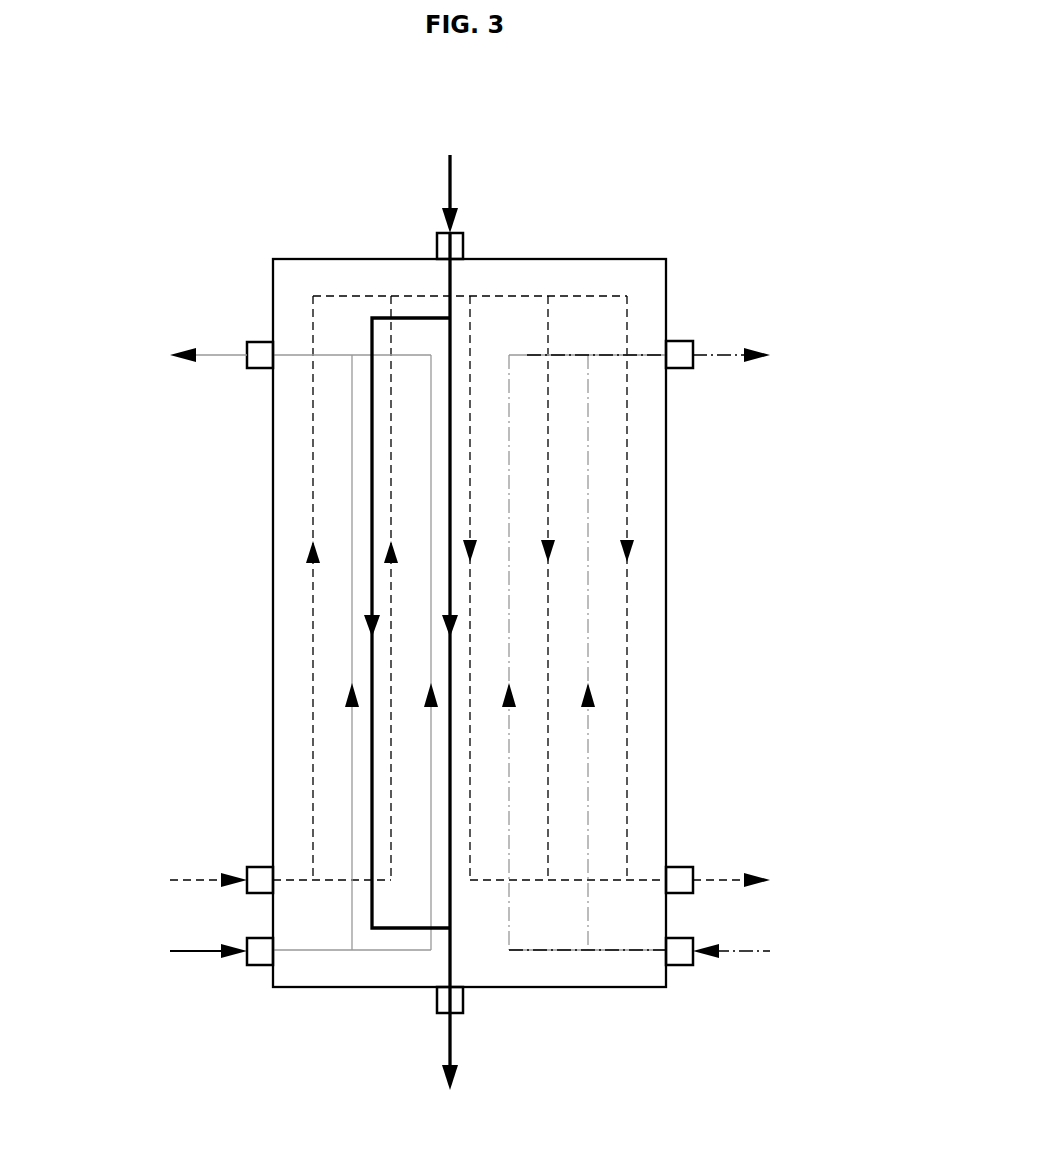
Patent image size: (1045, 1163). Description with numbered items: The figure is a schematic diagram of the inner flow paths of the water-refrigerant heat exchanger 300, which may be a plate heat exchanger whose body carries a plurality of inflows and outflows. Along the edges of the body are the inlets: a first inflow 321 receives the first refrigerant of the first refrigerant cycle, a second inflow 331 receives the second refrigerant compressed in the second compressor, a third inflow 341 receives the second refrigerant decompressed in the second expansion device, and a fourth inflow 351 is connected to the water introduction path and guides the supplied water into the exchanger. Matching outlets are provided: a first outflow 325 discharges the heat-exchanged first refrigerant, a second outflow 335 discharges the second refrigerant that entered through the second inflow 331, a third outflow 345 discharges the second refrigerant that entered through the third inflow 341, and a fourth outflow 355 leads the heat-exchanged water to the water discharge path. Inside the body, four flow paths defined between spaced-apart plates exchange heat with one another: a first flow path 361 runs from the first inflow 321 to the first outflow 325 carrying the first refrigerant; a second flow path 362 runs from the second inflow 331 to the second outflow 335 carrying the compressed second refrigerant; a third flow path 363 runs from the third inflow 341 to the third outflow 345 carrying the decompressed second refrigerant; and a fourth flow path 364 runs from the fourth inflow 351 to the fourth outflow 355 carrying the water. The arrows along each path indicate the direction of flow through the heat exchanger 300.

The water-refrigerant heat exchanger 300 is at (637, 148).
The first inflow 321 is at (260, 965).
The first outflow 325 is at (260, 342).
The second inflow 331 is at (680, 965).
The second outflow 335 is at (680, 341).
The third inflow 341 is at (463, 247).
The third outflow 345 is at (463, 1002).
The fourth inflow 351 is at (258, 867).
The fourth outflow 355 is at (680, 867).
The first flow path 361 is at (378, 952).
The second flow path 362 is at (625, 952).
The third flow path 363 is at (450, 340).
The fourth flow path 364 is at (313, 612).